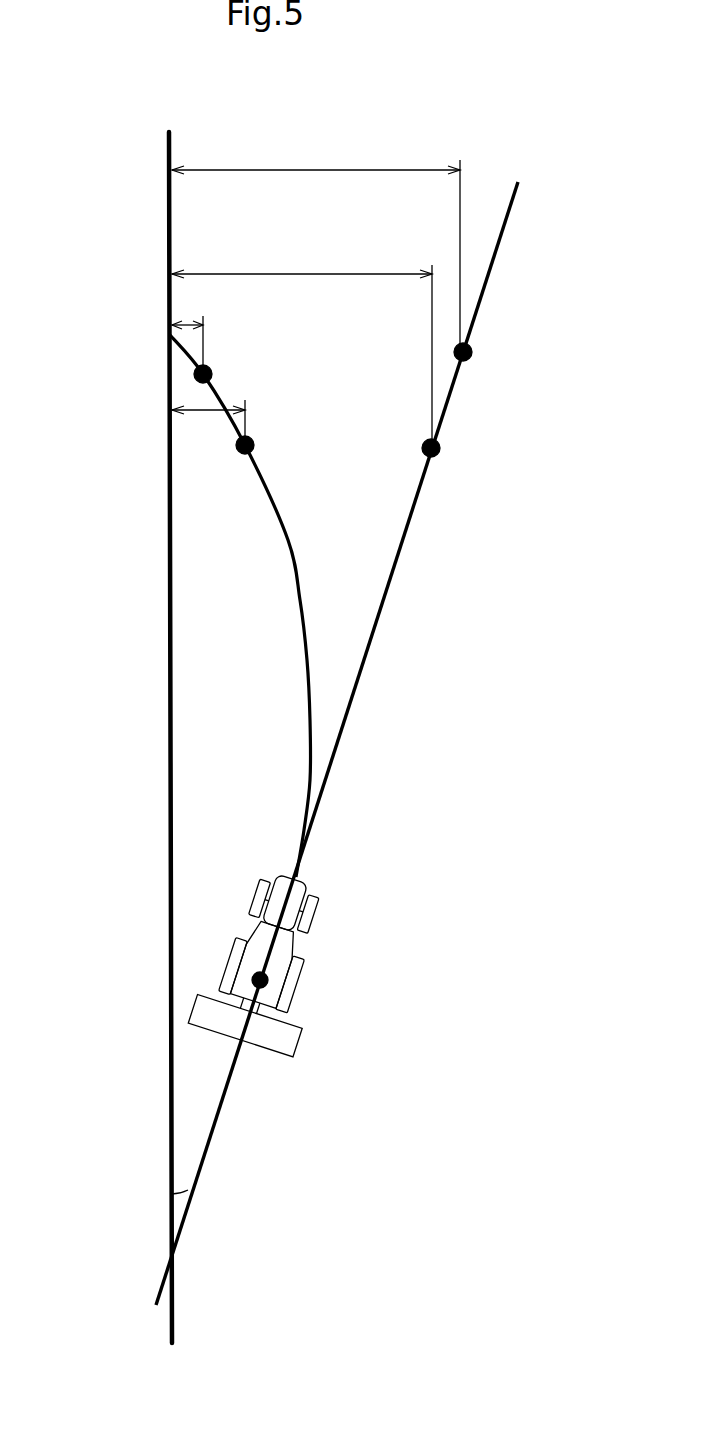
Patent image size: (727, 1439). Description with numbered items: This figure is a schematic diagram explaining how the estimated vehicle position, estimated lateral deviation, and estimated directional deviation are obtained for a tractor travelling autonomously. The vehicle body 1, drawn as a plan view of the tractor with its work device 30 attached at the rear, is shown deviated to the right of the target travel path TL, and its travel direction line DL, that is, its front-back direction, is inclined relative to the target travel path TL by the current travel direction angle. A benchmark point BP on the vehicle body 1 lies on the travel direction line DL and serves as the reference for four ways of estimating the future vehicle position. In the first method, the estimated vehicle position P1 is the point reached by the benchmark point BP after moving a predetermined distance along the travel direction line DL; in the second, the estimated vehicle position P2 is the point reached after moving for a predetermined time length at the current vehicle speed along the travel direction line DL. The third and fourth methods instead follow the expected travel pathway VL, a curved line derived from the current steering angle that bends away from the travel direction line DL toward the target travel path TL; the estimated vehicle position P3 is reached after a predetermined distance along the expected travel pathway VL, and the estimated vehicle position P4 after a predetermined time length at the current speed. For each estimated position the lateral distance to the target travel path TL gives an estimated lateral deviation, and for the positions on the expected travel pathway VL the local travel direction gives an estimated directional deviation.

The vehicle body 1 is at (302, 883).
The work device 30 is at (301, 1036).
The benchmark point BP is at (268, 976).
The target travel path TL is at (169, 778).
The travel direction line DL is at (393, 580).
The expected travel pathway VL is at (298, 631).
The estimated vehicle position P1 is at (449, 453).
The estimated vehicle position P2 is at (481, 353).
The estimated vehicle position P3 is at (263, 445).
The estimated vehicle position P4 is at (221, 376).